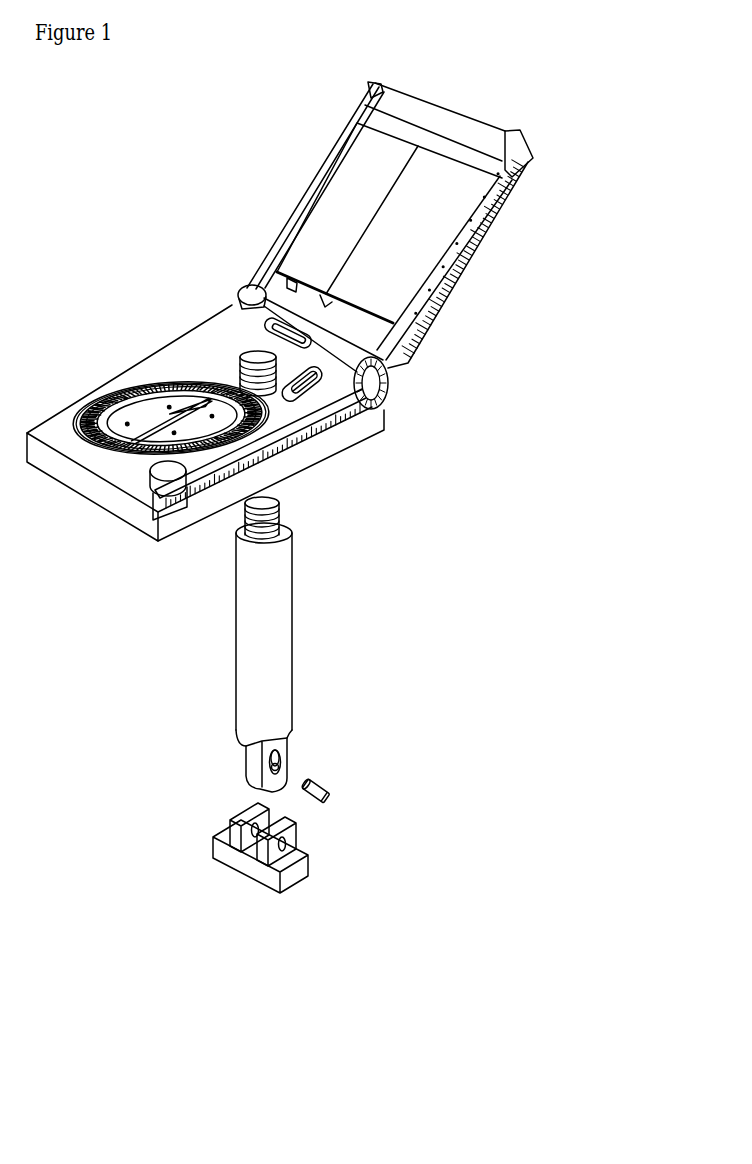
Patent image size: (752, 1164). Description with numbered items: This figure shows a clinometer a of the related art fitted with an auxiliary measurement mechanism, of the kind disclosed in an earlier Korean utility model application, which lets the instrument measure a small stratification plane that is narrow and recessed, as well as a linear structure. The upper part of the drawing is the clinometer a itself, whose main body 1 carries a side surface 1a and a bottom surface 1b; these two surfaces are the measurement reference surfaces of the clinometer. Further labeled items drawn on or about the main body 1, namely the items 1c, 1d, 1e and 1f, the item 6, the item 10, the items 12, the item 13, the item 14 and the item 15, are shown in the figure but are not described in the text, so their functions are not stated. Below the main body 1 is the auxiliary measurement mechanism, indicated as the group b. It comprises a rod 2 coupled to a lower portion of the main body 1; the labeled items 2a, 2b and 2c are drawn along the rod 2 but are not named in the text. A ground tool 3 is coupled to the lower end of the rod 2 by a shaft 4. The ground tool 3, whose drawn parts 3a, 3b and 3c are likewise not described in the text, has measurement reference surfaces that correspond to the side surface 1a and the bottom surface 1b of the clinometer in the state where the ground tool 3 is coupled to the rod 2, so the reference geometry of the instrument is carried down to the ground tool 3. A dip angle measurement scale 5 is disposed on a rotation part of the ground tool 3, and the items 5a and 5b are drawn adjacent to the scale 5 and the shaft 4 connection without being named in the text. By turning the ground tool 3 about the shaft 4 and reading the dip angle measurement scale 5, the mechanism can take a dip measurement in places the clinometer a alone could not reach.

The clinometer a is at (235, 220).
The stand assembly b is at (368, 652).
The main body 1 is at (238, 427).
The side surface 1a is at (297, 455).
The bottom surface 1b is at (100, 510).
The compass bezel ring 1c is at (137, 393).
The compass dial 1d is at (143, 410).
The graduation ring 1e is at (210, 385).
The hinge 1f is at (378, 392).
The rod 2 is at (233, 655).
The threaded end of rod 2a is at (277, 517).
The connecting tab 2b is at (250, 768).
The hole in tab 2c is at (282, 767).
The ground tool 3 is at (246, 892).
The base plate 3a is at (302, 882).
The upright bracket 3b is at (296, 832).
The pin hole in upright 3c is at (289, 842).
The shaft 4 is at (332, 795).
The dip angle measurement scale 5 is at (292, 757).
The pin hole in upright 5a is at (252, 824).
The hole 5b is at (278, 752).
The compass 6 is at (105, 403).
The locking knob 10 is at (157, 470).
The slot 12 is at (280, 330).
The lid ruler scale 13 is at (463, 283).
The mirror 14 is at (362, 200).
The threaded post 15 is at (240, 353).